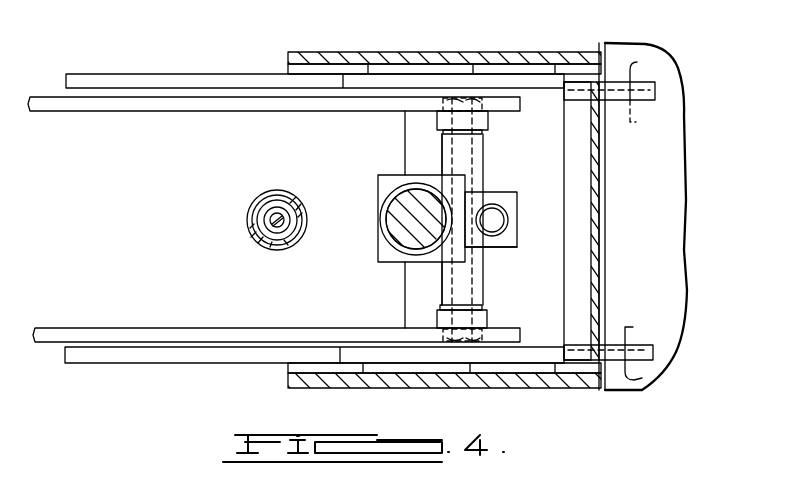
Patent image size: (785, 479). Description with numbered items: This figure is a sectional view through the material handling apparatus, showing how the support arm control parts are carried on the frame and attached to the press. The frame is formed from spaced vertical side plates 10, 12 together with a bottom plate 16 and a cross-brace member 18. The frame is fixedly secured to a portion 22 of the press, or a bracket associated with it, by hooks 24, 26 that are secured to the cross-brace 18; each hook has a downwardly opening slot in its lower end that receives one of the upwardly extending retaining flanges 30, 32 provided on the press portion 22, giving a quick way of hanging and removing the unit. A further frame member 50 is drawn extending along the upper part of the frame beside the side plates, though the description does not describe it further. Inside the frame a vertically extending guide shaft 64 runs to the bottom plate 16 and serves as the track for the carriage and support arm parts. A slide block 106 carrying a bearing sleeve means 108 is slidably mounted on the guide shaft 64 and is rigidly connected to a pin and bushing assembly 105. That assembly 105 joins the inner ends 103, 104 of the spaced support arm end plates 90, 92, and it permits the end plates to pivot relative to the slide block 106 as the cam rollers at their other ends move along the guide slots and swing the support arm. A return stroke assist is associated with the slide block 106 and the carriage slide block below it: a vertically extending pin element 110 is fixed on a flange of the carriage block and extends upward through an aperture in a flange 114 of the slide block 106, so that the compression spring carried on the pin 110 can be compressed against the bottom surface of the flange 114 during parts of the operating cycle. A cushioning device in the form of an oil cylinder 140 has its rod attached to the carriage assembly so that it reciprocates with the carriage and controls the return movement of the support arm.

The vertical side plate 10 is at (287, 382).
The vertical side plate 12 is at (287, 54).
The bottom plate 16 is at (406, 128).
The cross-brace member 18 is at (600, 209).
The press portion 22 is at (677, 307).
The hook 24 is at (643, 91).
The hook 26 is at (640, 383).
The retaining flange 30 is at (631, 77).
The retaining flange 32 is at (631, 327).
The upper bar 50 is at (145, 75).
The guide shaft 64 is at (408, 228).
The support arm end plate 90 is at (157, 112).
The support arm end plate 92 is at (120, 328).
The inner end of support arm end plate 103 is at (522, 108).
The inner end of support arm end plate 104 is at (540, 312).
The pin and bushing assembly 105 is at (484, 158).
The slide block 106 is at (378, 243).
The bearing sleeve means 108 is at (378, 189).
The pin element 110 is at (493, 218).
The flange 114 is at (515, 247).
The oil cylinder 140 is at (250, 211).